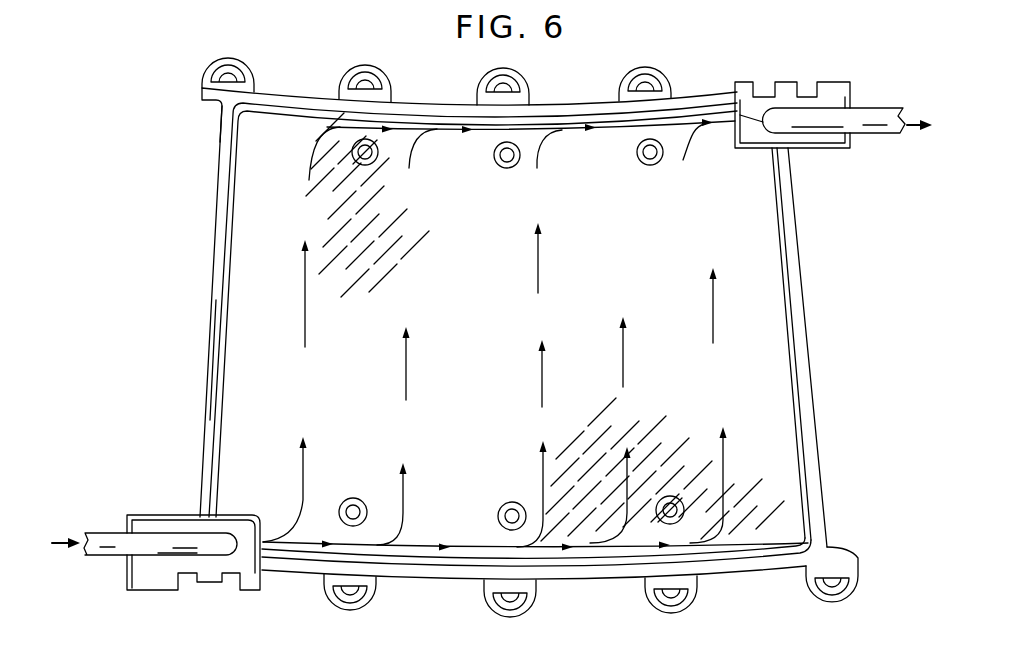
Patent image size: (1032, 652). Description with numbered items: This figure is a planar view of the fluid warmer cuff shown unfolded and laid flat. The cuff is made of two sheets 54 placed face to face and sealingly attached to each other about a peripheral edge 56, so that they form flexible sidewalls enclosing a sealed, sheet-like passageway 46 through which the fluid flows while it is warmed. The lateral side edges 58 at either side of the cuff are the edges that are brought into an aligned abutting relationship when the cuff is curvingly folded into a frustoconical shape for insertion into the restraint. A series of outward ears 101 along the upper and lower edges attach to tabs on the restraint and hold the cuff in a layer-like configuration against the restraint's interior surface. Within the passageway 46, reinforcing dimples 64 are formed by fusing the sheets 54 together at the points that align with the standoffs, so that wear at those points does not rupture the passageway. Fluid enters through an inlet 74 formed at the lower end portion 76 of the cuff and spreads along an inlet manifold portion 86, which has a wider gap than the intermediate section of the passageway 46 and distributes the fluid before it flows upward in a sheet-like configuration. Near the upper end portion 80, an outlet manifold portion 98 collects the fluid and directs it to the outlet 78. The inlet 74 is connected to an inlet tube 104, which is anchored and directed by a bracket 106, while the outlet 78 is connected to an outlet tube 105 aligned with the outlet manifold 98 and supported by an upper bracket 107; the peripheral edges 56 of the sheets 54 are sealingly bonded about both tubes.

The sealed passageway 46 is at (259, 247).
The sheets 54 is at (200, 183).
The peripheral edge 56 is at (219, 132).
The lateral side edges 58 is at (216, 312).
The reinforcing dimples 64 is at (508, 168).
The inlet 74 is at (277, 538).
The lower end portion 76 is at (425, 535).
The outlet 78 is at (738, 112).
The upper end portion 80 is at (533, 145).
The inlet manifold portion 86 is at (432, 545).
The outlet manifold portion 98 is at (447, 124).
The outward ears 101 is at (655, 70).
The inlet tube 104 is at (108, 533).
The outlet tube 105 is at (877, 115).
The bracket 106 is at (158, 580).
The upper bracket 107 is at (828, 84).